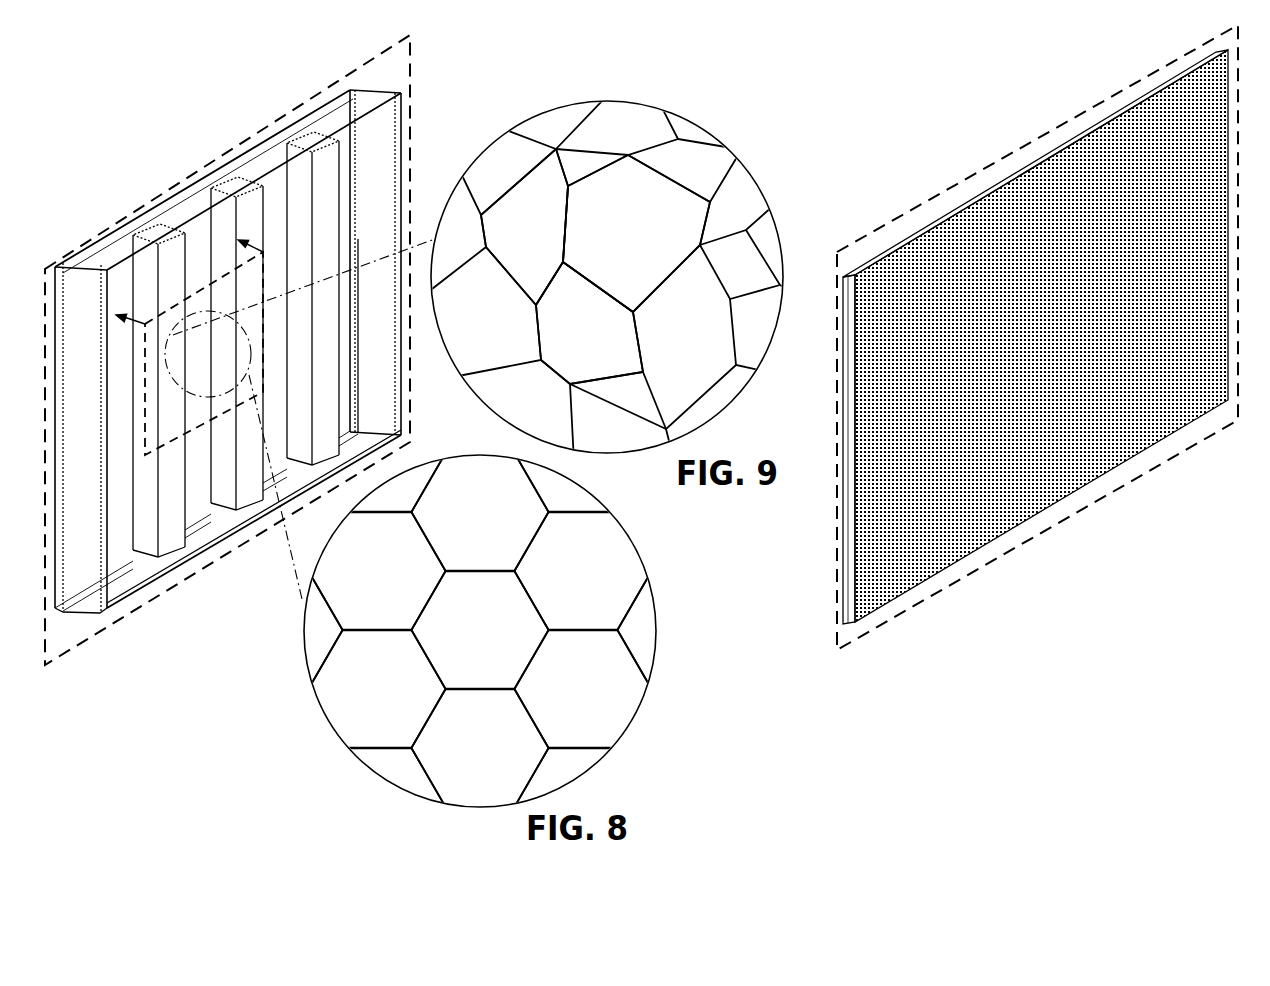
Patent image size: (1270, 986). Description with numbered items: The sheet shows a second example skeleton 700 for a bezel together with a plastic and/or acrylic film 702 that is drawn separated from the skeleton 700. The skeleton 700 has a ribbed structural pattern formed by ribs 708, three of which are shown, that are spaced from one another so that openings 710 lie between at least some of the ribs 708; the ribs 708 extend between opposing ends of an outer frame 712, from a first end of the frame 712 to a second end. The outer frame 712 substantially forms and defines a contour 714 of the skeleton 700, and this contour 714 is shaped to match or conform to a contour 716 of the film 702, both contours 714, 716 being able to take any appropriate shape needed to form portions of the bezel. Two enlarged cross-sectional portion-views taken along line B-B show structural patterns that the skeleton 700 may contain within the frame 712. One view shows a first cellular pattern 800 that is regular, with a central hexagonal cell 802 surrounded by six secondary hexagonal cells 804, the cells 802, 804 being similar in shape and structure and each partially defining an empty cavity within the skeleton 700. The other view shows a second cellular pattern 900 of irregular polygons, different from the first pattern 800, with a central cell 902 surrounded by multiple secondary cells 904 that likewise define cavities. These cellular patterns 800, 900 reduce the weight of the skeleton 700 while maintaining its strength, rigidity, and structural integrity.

In FIG. 7, the second skeleton 700 is at (163, 189).
In FIG. 7, the film 702 is at (1020, 160).
In FIG. 7, the ribs 708 is at (148, 530).
In FIG. 7, the openings 710 is at (220, 471).
In FIG. 7, the outer frame 712 is at (388, 88).
In FIG. 7, the contour of the skeleton 714 is at (322, 88).
In FIG. 7, the contour of the film 716 is at (970, 184).
In FIG. 8, the first cellular pattern 800 is at (662, 608).
In FIG. 8, the central cell 802 is at (490, 645).
In FIG. 8, the secondary cells 804 is at (387, 580).
In FIG. 9, the second cellular pattern 900 is at (765, 165).
In FIG. 9, the central cell 902 is at (642, 240).
In FIG. 9, the secondary cells 904 is at (547, 240).